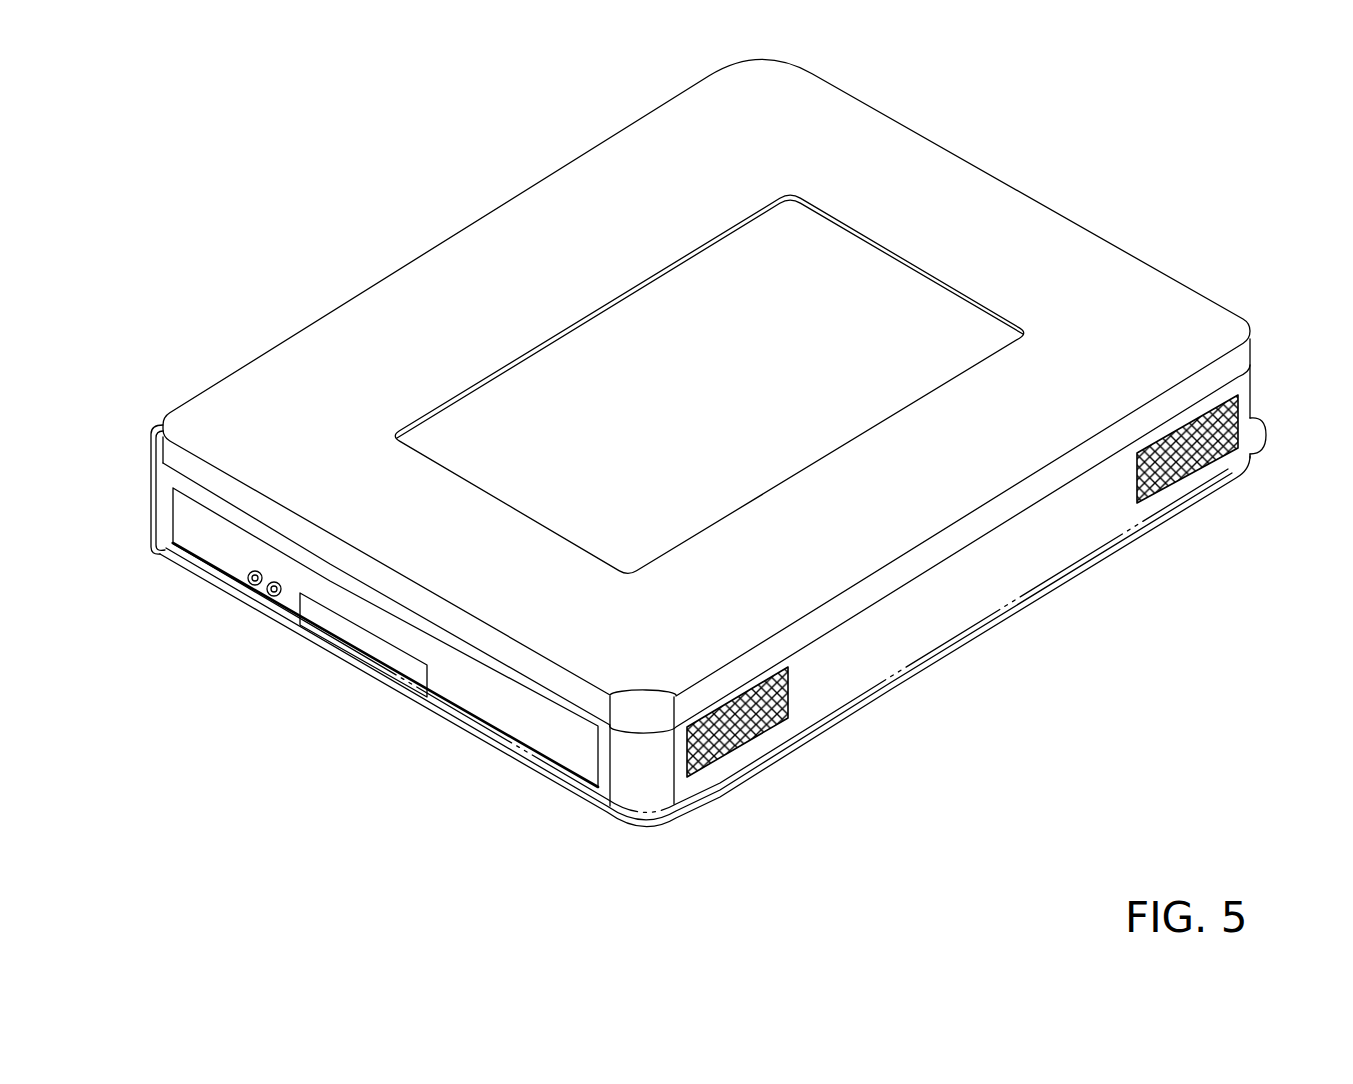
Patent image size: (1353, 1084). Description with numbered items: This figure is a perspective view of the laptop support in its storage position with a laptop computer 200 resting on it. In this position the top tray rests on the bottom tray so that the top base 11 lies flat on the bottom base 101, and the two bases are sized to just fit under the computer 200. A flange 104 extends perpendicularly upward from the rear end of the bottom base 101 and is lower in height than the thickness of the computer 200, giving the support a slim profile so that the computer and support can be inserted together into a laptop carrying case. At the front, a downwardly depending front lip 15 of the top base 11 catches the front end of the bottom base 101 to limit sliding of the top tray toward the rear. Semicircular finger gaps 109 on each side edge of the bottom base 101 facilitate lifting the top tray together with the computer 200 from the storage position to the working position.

The computer 200 is at (835, 137).
The flange 104 is at (151, 435).
The bottom base 101 is at (155, 553).
The semicircular finger gaps 109 is at (436, 717).
The front lip 15 is at (708, 796).
The top base 11 is at (1265, 432).